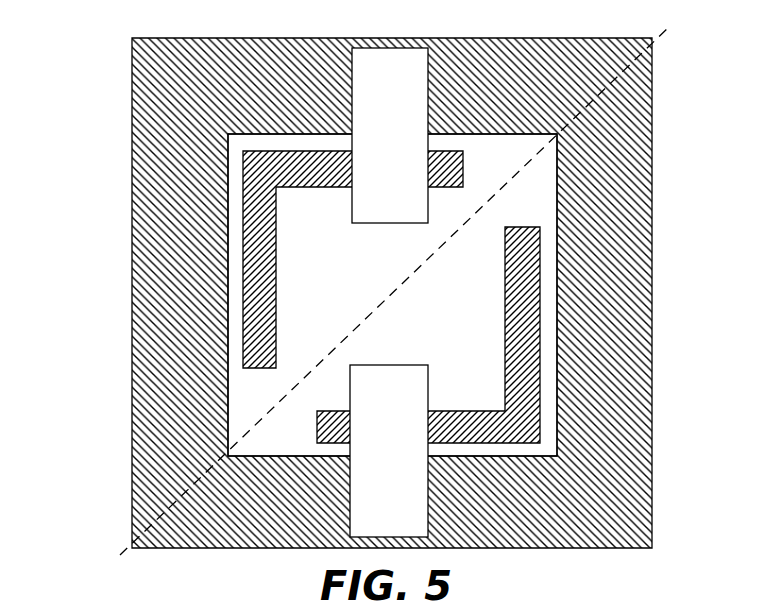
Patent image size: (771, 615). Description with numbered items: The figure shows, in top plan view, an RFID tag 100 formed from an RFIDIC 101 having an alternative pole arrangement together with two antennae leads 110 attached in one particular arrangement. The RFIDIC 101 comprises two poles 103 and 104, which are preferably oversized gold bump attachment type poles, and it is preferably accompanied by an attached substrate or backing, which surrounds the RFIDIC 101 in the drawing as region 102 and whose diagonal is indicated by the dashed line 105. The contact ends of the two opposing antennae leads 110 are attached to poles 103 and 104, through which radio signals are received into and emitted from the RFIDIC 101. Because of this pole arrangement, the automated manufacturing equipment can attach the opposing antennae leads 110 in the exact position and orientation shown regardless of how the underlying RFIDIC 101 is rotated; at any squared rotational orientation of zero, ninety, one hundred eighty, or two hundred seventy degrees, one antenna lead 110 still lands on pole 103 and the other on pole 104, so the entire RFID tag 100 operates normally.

The RFID tag 100 is at (62, 58).
The RFIDIC 101 is at (341, 324).
The isolation region 102 is at (145, 360).
The pole 103 is at (253, 216).
The pole 104 is at (518, 318).
The diagonal axis line 105 is at (660, 42).
The antennae leads 110 is at (408, 108).